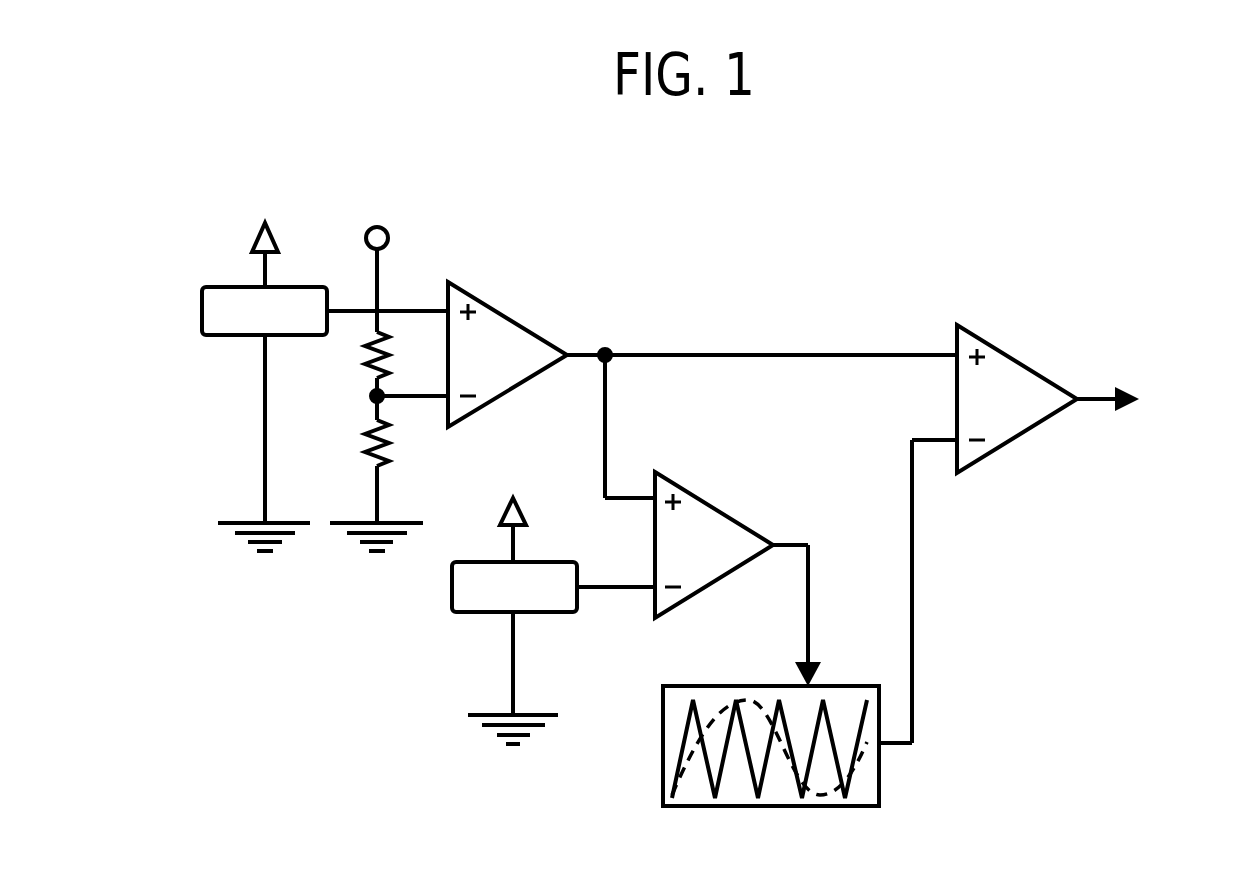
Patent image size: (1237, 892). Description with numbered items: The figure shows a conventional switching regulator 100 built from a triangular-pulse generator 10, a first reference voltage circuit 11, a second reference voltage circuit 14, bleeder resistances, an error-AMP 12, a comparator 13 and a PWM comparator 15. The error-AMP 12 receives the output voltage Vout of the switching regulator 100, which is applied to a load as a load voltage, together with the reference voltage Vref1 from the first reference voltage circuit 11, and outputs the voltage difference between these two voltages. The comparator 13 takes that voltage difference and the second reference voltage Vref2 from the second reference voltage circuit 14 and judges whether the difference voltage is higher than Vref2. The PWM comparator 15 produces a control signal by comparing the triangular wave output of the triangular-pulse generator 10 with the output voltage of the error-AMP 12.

The switching regulator 100 is at (829, 242).
The triangular-pulse generator 10 is at (881, 768).
The first reference voltage circuit 11 is at (222, 338).
The error-AMP 12 is at (507, 391).
The comparator 13 is at (713, 584).
The second reference voltage circuit 14 is at (470, 614).
The PWM comparator 15 is at (1018, 436).